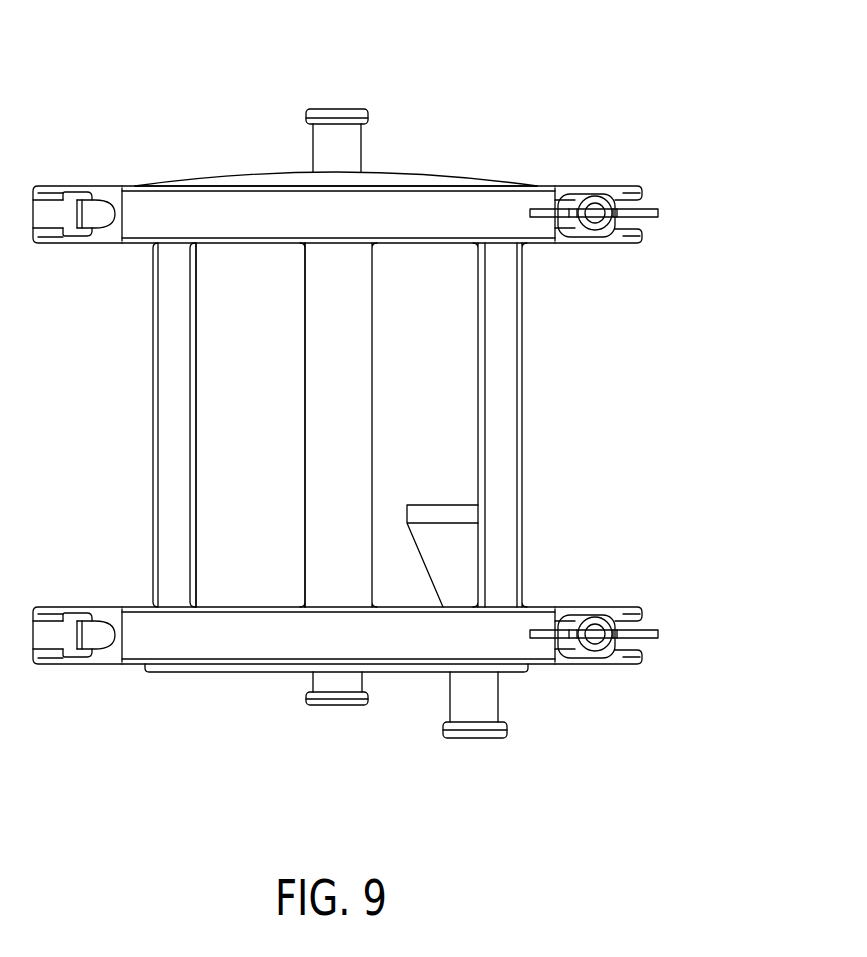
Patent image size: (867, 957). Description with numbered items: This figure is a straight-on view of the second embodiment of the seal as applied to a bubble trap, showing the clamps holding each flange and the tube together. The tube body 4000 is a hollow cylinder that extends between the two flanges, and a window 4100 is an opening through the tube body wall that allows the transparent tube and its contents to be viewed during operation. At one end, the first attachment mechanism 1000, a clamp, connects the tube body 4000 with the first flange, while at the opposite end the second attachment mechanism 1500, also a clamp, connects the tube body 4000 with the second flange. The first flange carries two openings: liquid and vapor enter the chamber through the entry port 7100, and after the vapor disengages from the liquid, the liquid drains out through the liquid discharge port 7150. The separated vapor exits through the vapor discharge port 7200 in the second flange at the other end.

The first attachment mechanism 1000 is at (140, 633).
The second attachment mechanism 1500 is at (507, 203).
The tube body 4000 is at (158, 422).
The window 4100 is at (225, 539).
The vapor discharge port 7200 is at (342, 105).
The entry port 7100 is at (330, 708).
The liquid discharge port 7150 is at (480, 740).